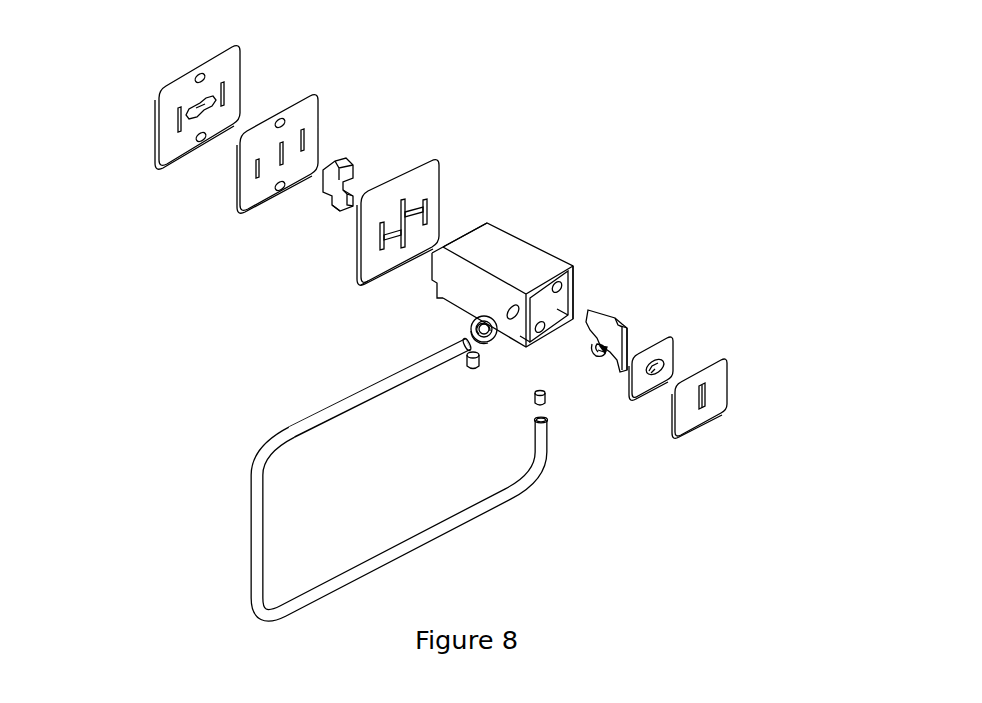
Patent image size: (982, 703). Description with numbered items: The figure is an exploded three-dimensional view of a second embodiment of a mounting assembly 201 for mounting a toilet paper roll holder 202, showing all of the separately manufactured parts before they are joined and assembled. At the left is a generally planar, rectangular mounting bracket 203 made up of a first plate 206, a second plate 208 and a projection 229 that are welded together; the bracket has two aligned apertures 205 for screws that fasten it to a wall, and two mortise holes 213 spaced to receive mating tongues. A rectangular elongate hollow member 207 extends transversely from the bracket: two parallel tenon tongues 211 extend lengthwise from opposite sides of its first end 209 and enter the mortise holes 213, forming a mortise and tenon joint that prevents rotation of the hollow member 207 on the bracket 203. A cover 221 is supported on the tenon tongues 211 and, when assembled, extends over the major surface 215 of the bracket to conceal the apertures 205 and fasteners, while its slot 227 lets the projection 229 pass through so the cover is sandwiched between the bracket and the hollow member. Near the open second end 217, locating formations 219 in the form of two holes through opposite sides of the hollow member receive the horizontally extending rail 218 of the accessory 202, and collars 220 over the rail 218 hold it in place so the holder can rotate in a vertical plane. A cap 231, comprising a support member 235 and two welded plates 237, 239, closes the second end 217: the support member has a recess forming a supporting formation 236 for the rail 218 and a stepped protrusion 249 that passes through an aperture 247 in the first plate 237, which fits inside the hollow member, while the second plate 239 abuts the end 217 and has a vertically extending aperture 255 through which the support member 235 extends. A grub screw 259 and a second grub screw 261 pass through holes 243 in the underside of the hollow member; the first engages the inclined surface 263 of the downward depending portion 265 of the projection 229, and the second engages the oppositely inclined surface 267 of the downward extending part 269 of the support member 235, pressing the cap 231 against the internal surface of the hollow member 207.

The mounting assembly 201 is at (167, 47).
The toilet paper roll holder 202 is at (402, 477).
The mounting bracket 203 is at (170, 229).
The apertures 205 is at (201, 74).
The first plate 206 is at (198, 101).
The elongate hollow member 207 is at (537, 267).
The second plate 208 is at (318, 145).
The first end 209 is at (488, 222).
The tenon tongues 211 is at (441, 283).
The mortise holes 213 is at (303, 148).
The major surface 215 is at (318, 142).
The second end 217 is at (577, 292).
The rail 218 is at (435, 361).
The locating formations 219 is at (595, 287).
The collars 220 is at (499, 344).
The cover 221 is at (429, 225).
The slot 227 is at (417, 217).
The projection 229 is at (352, 163).
The cap 231 is at (760, 285).
The support member 235 is at (615, 318).
The supporting formation 236 is at (602, 356).
The first plate 237 is at (688, 349).
The second plate 239 is at (742, 394).
The holes 243 is at (544, 329).
The aperture 247 is at (663, 360).
The stepped protrusion 249 is at (630, 337).
The vertically extending aperture 255 is at (707, 402).
The grub screw 259 is at (477, 370).
The grub screw 261 is at (545, 406).
The inclined surface 263 is at (342, 208).
The downward depending portion 265 is at (361, 287).
The inclined surface 267 is at (603, 357).
The downward extending part 269 is at (609, 408).